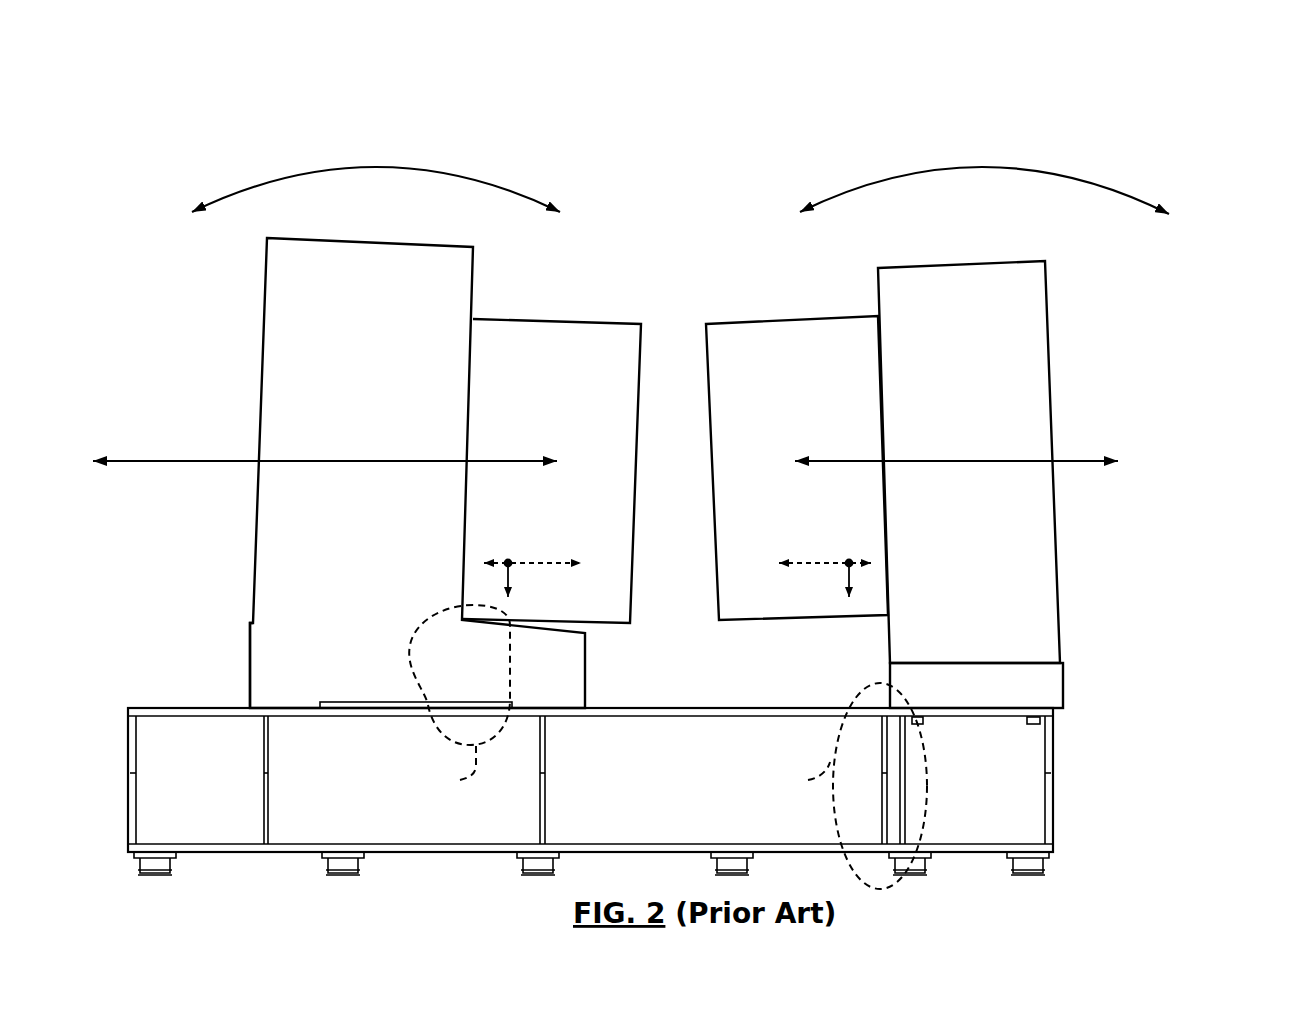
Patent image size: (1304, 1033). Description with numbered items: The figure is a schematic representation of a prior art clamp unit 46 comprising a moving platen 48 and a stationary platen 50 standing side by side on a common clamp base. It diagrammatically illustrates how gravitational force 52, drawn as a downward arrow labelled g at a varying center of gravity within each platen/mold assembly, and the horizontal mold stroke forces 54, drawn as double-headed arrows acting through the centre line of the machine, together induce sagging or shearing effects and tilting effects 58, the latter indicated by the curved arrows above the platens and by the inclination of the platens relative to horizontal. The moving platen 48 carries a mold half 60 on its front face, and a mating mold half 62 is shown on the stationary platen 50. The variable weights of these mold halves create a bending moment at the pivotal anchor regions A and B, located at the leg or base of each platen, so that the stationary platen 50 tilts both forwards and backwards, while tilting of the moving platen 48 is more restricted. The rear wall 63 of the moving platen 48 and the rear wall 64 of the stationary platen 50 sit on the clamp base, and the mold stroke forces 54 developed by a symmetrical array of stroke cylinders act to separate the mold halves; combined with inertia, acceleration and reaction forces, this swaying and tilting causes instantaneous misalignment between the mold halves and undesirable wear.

The clamp unit 46 is at (1202, 143).
The moving platen 48 is at (266, 305).
The stationary platen 50 is at (1044, 324).
The gravitational force 52 is at (510, 575).
The mold stroke forces 54 is at (198, 461).
The tilting effects 58 is at (458, 175).
The mold half 60 is at (552, 320).
The second mold half 62 is at (753, 322).
The rear wall 63 is at (250, 648).
The rear wall 64 is at (1063, 684).